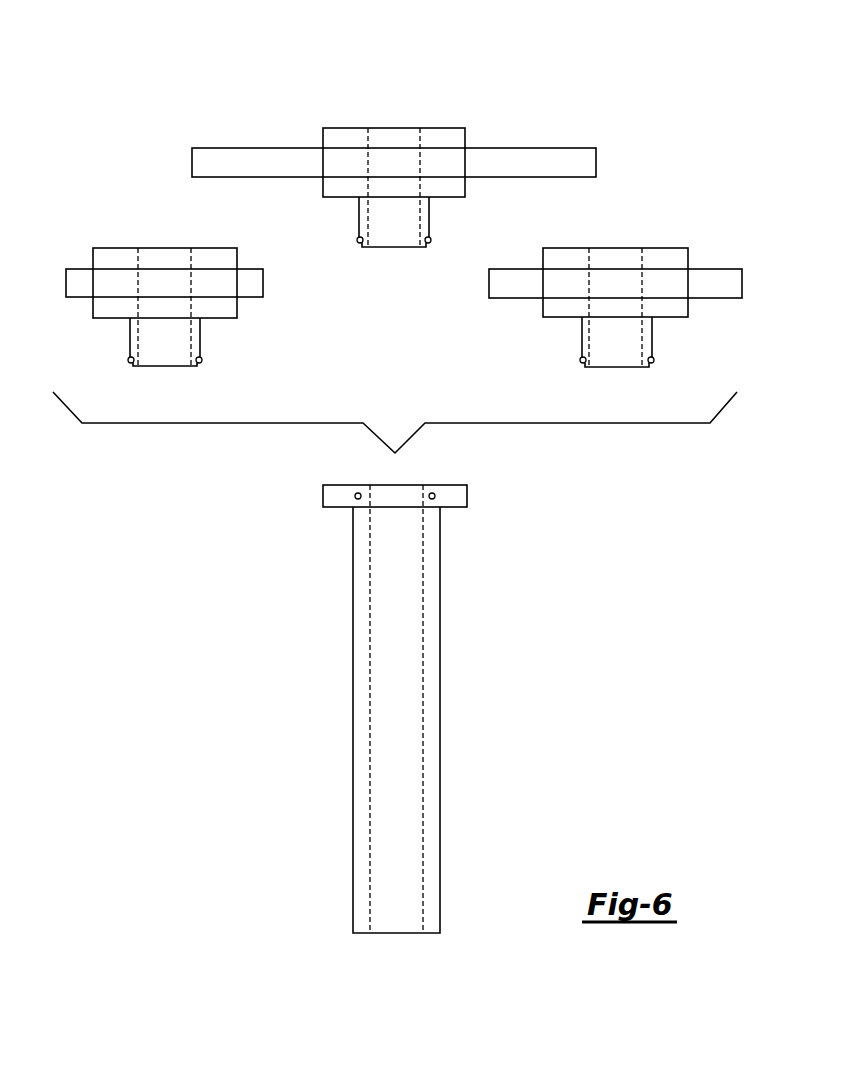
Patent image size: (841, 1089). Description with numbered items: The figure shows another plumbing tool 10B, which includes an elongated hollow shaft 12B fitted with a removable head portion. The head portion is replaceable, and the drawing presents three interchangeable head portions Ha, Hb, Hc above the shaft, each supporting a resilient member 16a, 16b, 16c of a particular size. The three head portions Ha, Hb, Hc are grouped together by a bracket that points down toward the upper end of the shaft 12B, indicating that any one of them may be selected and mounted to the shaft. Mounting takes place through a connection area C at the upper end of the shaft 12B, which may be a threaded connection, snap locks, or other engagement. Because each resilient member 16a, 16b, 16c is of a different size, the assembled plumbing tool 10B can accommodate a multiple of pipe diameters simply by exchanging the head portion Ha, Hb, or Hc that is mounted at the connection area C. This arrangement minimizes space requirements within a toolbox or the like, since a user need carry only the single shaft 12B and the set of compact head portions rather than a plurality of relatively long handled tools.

The plumbing tool 10B is at (510, 705).
The elongated hollow shaft 12B is at (430, 675).
The connection area C is at (467, 497).
The resilient member 16a is at (82, 283).
The resilient member 16b is at (485, 147).
The resilient member 16c is at (717, 268).
The head portion Ha is at (179, 307).
The head portion Hb is at (451, 147).
The head portion Hc is at (588, 291).